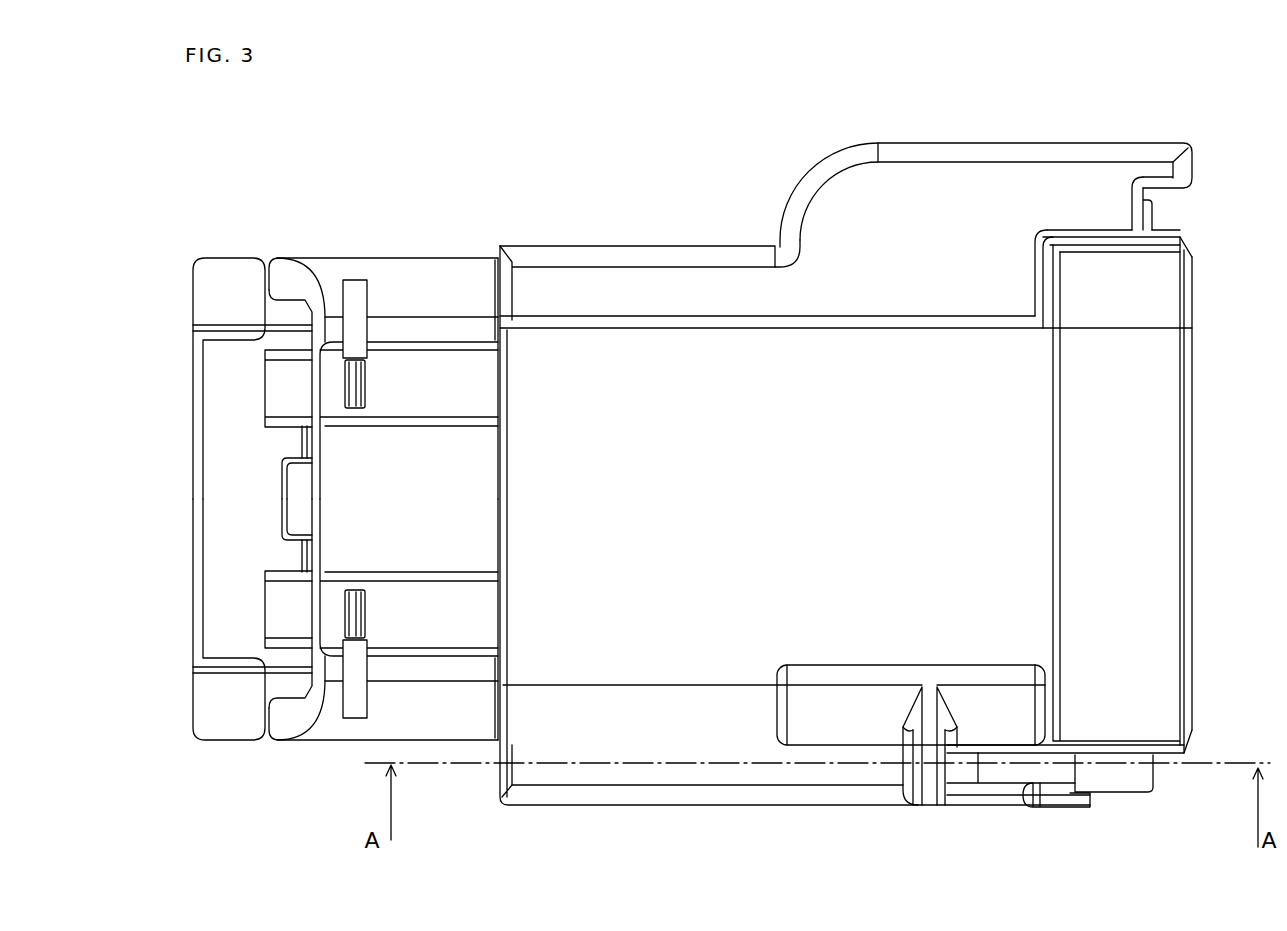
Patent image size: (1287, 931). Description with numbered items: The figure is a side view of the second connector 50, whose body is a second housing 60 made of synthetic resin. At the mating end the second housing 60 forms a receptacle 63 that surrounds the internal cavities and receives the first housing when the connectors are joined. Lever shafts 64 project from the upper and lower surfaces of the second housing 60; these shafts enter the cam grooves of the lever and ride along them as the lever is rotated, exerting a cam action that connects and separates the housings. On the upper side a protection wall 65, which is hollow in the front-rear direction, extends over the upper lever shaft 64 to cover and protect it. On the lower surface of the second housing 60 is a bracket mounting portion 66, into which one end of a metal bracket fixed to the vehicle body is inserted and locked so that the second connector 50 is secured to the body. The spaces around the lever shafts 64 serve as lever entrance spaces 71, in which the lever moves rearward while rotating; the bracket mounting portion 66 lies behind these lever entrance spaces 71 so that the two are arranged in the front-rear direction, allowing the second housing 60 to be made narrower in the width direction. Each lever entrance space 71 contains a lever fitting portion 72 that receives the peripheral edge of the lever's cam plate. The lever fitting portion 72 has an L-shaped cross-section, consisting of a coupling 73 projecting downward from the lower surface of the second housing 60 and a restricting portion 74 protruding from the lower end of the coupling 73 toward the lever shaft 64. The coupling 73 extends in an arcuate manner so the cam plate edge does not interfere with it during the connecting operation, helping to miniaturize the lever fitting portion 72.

The second connector 50 is at (634, 126).
The second housing 60 is at (651, 227).
The receptacle 63 is at (1170, 360).
The lever shaft 64 is at (1148, 212).
The protection wall 65 is at (1020, 142).
The bracket mounting portion 66 is at (706, 781).
The lever entrance space 71 is at (1165, 230).
The lever fitting portion 72 is at (1080, 836).
The coupling 73 is at (1053, 772).
The restricting portion 74 is at (1061, 790).